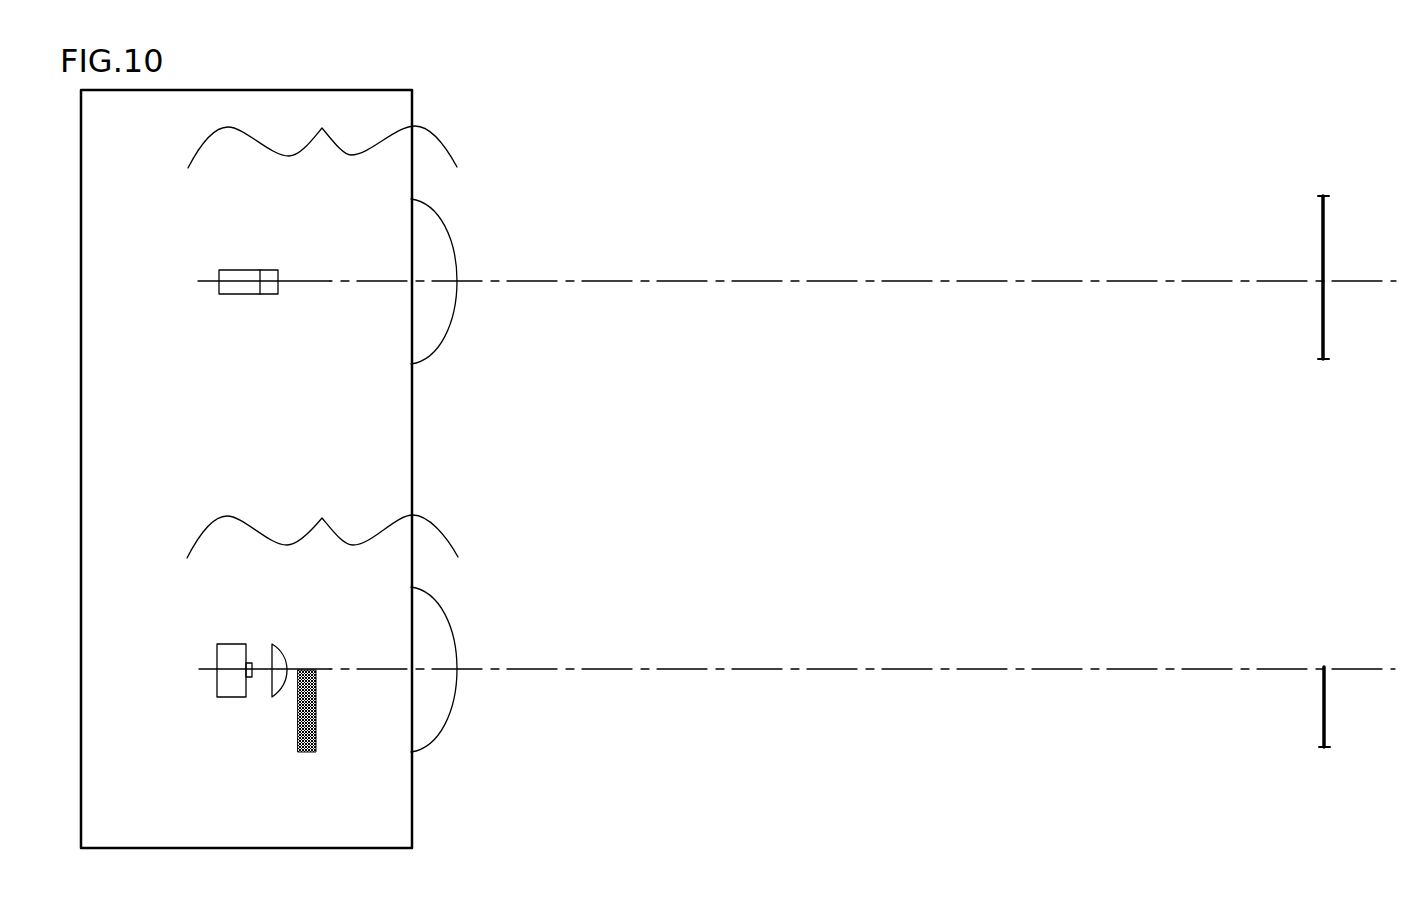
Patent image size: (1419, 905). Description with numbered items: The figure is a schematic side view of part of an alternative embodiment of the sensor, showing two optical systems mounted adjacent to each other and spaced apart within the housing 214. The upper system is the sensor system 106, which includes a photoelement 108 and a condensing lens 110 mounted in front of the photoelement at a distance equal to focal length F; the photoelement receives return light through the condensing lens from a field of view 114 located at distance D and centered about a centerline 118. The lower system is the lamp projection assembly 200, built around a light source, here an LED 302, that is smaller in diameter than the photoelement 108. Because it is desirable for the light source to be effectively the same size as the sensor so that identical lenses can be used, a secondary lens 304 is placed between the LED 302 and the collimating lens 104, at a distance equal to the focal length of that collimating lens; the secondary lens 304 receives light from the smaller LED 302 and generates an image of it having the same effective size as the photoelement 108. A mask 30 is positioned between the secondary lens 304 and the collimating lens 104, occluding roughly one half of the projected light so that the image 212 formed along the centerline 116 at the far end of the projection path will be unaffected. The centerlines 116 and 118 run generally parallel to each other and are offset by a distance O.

The mask 30 is at (317, 693).
The collimating lens 104 is at (411, 588).
The sensor system 106 is at (322, 134).
The photoelement 108 is at (268, 270).
The condensing lens 110 is at (411, 198).
The field of view 114 is at (1322, 243).
The centerline 116 is at (594, 668).
The centerline 118 is at (585, 280).
The second optical assembly 200 is at (322, 524).
The image 212 is at (1320, 724).
The housing 214 is at (110, 220).
The LED 302 is at (217, 650).
The secondary lens 304 is at (278, 647).